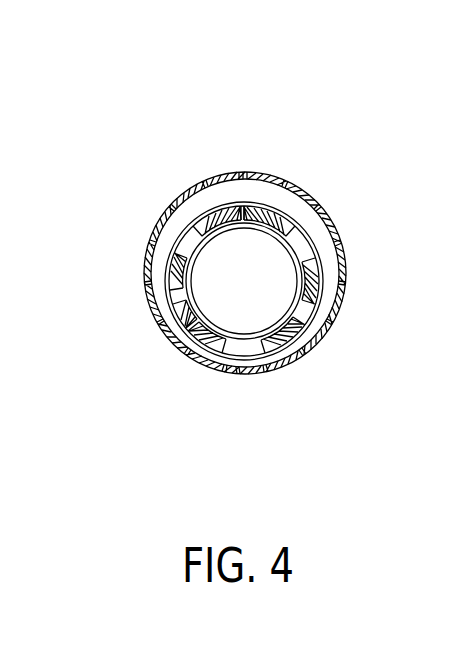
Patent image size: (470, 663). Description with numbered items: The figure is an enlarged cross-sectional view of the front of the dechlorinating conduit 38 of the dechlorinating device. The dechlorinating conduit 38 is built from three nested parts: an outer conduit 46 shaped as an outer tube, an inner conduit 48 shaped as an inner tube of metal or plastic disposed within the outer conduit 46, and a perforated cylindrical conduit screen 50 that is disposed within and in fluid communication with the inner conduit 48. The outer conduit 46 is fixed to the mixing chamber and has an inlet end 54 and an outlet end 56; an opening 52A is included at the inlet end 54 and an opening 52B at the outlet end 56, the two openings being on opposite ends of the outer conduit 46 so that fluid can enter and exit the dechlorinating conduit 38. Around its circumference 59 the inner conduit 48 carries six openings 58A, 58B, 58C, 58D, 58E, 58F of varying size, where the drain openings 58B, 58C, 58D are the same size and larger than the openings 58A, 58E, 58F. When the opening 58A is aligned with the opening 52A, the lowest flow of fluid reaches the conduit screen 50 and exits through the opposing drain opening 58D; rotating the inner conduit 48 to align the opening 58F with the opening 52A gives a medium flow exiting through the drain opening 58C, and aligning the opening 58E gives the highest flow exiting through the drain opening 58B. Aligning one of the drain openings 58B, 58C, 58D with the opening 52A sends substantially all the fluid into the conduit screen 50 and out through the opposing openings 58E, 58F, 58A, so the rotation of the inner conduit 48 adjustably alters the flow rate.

The dechlorinating conduit 38 is at (341, 122).
The outer conduit 46 is at (308, 203).
The inner conduit 48 is at (345, 262).
The conduit screen 50 is at (304, 343).
The opening 52A is at (249, 174).
The opening 52B is at (264, 371).
The inlet end 54 is at (230, 173).
The outlet end 56 is at (236, 367).
The opening 58A is at (202, 220).
The drain opening 58B is at (319, 252).
The drain opening 58C is at (306, 323).
The drain opening 58D is at (219, 356).
The opening 58E is at (172, 306).
The opening 58F is at (169, 252).
The circumference 59 is at (247, 204).